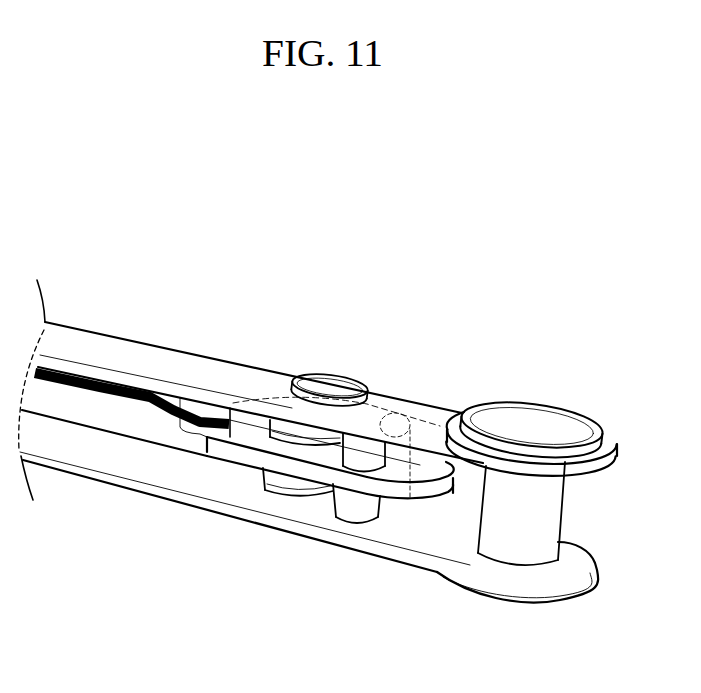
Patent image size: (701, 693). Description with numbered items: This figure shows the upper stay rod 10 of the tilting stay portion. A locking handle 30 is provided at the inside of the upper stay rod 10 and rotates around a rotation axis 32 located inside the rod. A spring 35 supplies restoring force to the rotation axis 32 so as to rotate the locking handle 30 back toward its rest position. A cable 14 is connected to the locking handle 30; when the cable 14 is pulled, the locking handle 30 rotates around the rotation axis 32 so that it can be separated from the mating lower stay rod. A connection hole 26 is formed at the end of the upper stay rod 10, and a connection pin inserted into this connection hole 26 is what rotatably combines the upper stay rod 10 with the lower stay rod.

The upper stay rod 10 is at (155, 360).
The cable 14 is at (97, 393).
The connection hole 26 is at (533, 423).
The locking handle 30 is at (245, 453).
The rotation axis 32 is at (333, 380).
The spring 35 is at (288, 495).